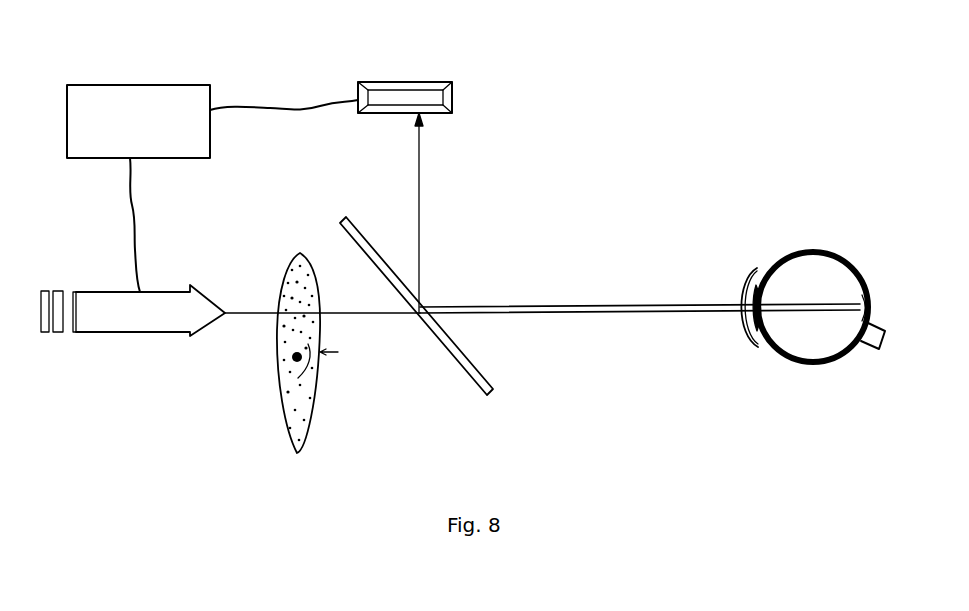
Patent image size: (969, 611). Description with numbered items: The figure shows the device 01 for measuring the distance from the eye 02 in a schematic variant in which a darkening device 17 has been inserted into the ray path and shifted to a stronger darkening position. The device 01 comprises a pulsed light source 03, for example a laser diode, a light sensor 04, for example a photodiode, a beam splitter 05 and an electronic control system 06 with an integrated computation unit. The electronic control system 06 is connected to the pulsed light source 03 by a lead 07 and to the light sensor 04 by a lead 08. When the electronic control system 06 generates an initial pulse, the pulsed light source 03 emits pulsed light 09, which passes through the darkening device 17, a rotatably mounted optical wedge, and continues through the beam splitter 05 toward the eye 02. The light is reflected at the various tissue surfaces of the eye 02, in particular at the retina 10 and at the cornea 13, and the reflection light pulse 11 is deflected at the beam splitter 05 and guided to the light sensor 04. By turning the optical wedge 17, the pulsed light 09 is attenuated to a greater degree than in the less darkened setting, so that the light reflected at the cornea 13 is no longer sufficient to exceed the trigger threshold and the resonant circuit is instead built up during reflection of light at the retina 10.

The device 01 is at (479, 148).
The eye 02 is at (808, 250).
The pulsed light source 03 is at (137, 333).
The light sensor 04 is at (410, 82).
The beam splitter 05 is at (480, 367).
The electronic control system 06 is at (148, 93).
The lead 07 is at (137, 238).
The lead 08 is at (288, 108).
The pulsed light 09 is at (383, 315).
The retina 10 is at (861, 302).
The reflection light pulse 11 is at (423, 275).
The cornea 13 is at (742, 287).
The darkening device 17 is at (311, 410).